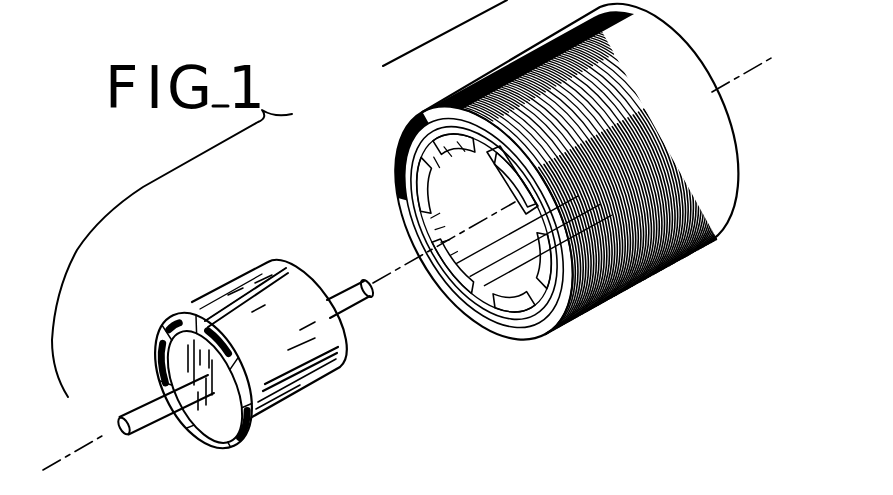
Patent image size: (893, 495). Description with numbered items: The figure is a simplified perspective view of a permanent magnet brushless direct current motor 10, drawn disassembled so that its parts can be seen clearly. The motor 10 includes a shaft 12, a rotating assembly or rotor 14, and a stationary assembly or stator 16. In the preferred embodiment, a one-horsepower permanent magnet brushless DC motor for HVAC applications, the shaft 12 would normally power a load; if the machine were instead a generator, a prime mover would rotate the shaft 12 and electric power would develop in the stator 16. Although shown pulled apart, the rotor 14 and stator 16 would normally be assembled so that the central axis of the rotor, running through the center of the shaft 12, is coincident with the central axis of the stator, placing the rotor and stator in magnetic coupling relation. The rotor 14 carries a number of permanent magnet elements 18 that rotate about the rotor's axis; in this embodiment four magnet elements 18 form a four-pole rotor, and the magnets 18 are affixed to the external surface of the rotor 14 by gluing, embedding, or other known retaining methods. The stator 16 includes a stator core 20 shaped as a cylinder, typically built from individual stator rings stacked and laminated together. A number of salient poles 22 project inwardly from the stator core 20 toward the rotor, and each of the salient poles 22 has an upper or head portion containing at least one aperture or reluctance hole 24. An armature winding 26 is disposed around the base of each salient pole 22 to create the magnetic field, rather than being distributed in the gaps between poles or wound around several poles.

The permanent magnet brushless DC motor 10 is at (147, 152).
The shaft 12 is at (160, 424).
The rotor 14 is at (320, 404).
The stator 16 is at (646, 277).
The permanent magnet elements 18 is at (297, 300).
The stator core 20 is at (490, 148).
The salient poles 22 is at (445, 137).
The reluctance hole 24 is at (533, 193).
The armature winding 26 is at (513, 326).